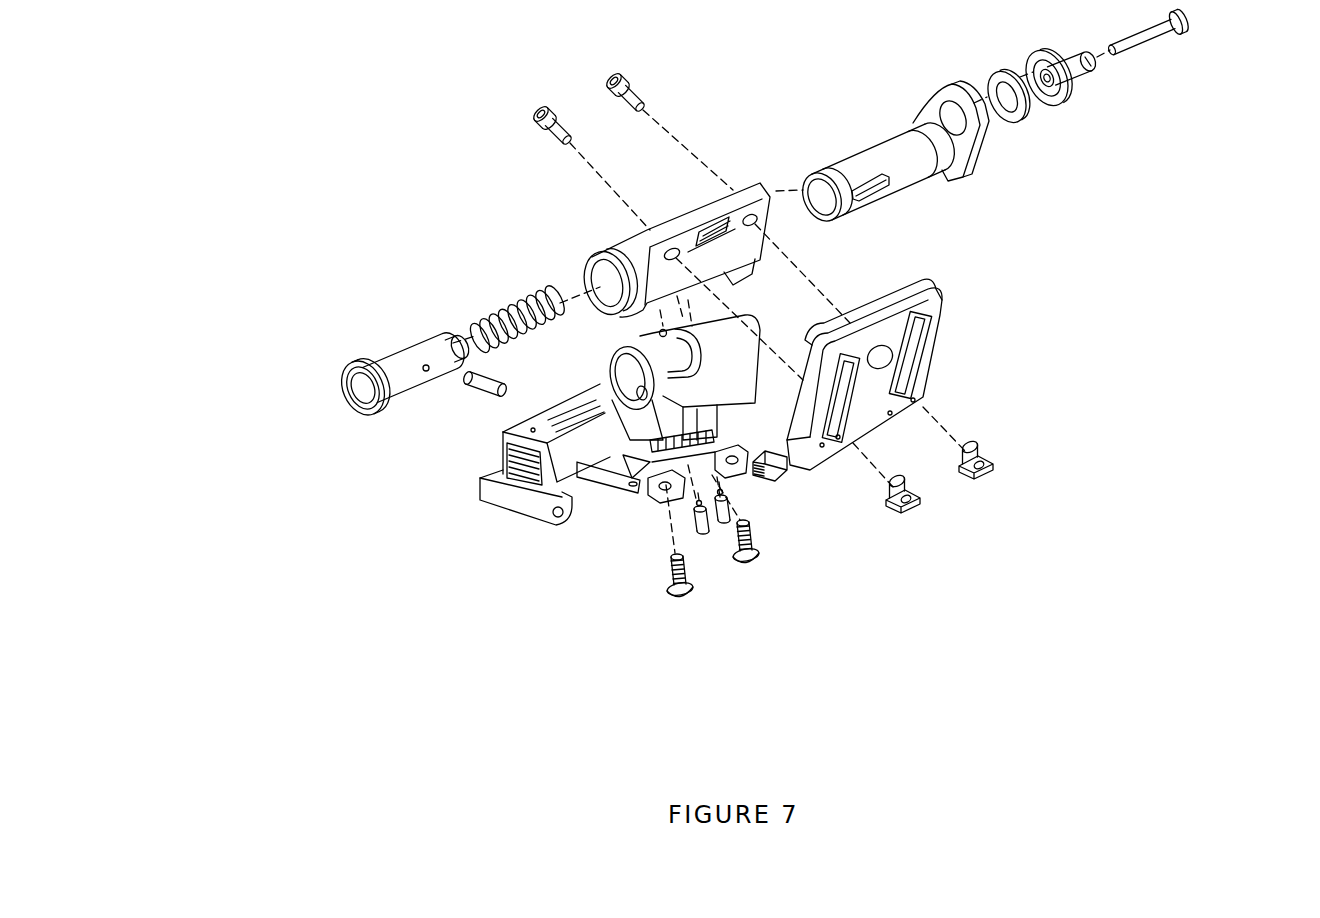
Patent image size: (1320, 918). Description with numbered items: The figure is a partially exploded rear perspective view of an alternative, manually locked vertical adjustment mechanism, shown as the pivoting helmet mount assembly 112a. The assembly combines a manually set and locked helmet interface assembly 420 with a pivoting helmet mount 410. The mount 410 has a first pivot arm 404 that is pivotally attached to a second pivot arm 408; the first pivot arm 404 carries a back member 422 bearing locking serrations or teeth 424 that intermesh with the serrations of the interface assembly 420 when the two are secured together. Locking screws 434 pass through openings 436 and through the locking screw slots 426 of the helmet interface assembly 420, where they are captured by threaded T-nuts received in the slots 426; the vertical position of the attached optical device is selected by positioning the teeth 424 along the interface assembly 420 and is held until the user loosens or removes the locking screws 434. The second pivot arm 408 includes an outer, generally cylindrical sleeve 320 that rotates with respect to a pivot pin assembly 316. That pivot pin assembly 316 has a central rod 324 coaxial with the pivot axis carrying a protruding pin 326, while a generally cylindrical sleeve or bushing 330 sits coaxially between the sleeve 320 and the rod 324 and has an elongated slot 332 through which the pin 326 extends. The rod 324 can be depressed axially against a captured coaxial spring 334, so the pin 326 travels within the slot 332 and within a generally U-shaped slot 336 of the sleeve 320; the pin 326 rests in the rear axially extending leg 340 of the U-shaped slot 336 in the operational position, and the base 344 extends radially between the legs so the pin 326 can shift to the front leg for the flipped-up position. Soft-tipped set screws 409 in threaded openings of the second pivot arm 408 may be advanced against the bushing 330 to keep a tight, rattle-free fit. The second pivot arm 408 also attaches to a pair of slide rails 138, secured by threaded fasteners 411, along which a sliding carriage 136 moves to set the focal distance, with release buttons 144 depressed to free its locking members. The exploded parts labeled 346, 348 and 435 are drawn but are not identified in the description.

The pivoting helmet mount assembly 112a is at (381, 93).
The pivoting helmet mount 410 is at (252, 262).
The central rod 324 is at (402, 356).
The pivot pin assembly 316 is at (360, 392).
The protruding pin 326 is at (480, 385).
The captured coaxial spring 334 is at (516, 306).
The first pivot arm 404 is at (627, 267).
The openings 436 is at (757, 222).
The locking serrations or teeth 424 is at (720, 232).
The back member 422 is at (700, 228).
The locking screws 434 is at (630, 77).
The sleeve or bushing 330 is at (917, 158).
The elongated slot 332 is at (872, 185).
The bearing 346 is at (1075, 82).
The pin 348 is at (1148, 45).
The outer cylindrical sleeve 320 is at (650, 355).
The U-shaped slot 336 is at (695, 343).
The base 344 is at (670, 333).
The second pivot arm 408 is at (633, 421).
The sliding carriage 136 is at (490, 453).
The release buttons 144 is at (523, 473).
The rear axially extending leg 340 is at (655, 498).
The slide rails 138 is at (653, 523).
The helmet interface assembly 420 is at (945, 345).
The locking screw slots 426 is at (915, 358).
The nuts 435 is at (920, 513).
The threaded fasteners 411 is at (680, 598).
The soft-tipped set screws 409 is at (703, 532).